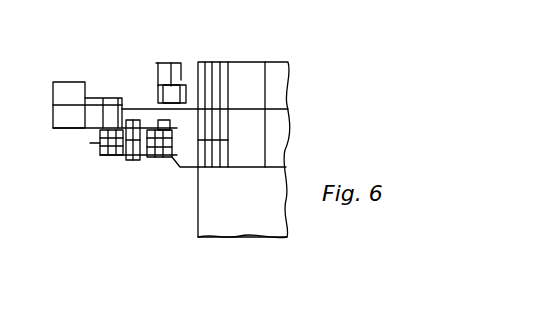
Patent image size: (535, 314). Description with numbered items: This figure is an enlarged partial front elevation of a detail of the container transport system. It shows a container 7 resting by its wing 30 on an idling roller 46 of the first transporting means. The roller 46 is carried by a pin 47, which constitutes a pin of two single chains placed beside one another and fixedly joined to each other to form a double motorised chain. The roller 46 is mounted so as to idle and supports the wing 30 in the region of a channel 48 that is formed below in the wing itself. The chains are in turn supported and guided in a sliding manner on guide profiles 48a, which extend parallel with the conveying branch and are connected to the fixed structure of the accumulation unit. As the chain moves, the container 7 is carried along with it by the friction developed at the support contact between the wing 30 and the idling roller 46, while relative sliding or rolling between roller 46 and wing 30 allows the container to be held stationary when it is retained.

The container 7 is at (186, 198).
The wing 30 is at (130, 103).
The idling roller 46 is at (128, 158).
The pin 47 is at (100, 143).
The channel 48 is at (135, 108).
The guide profile 48a is at (105, 156).